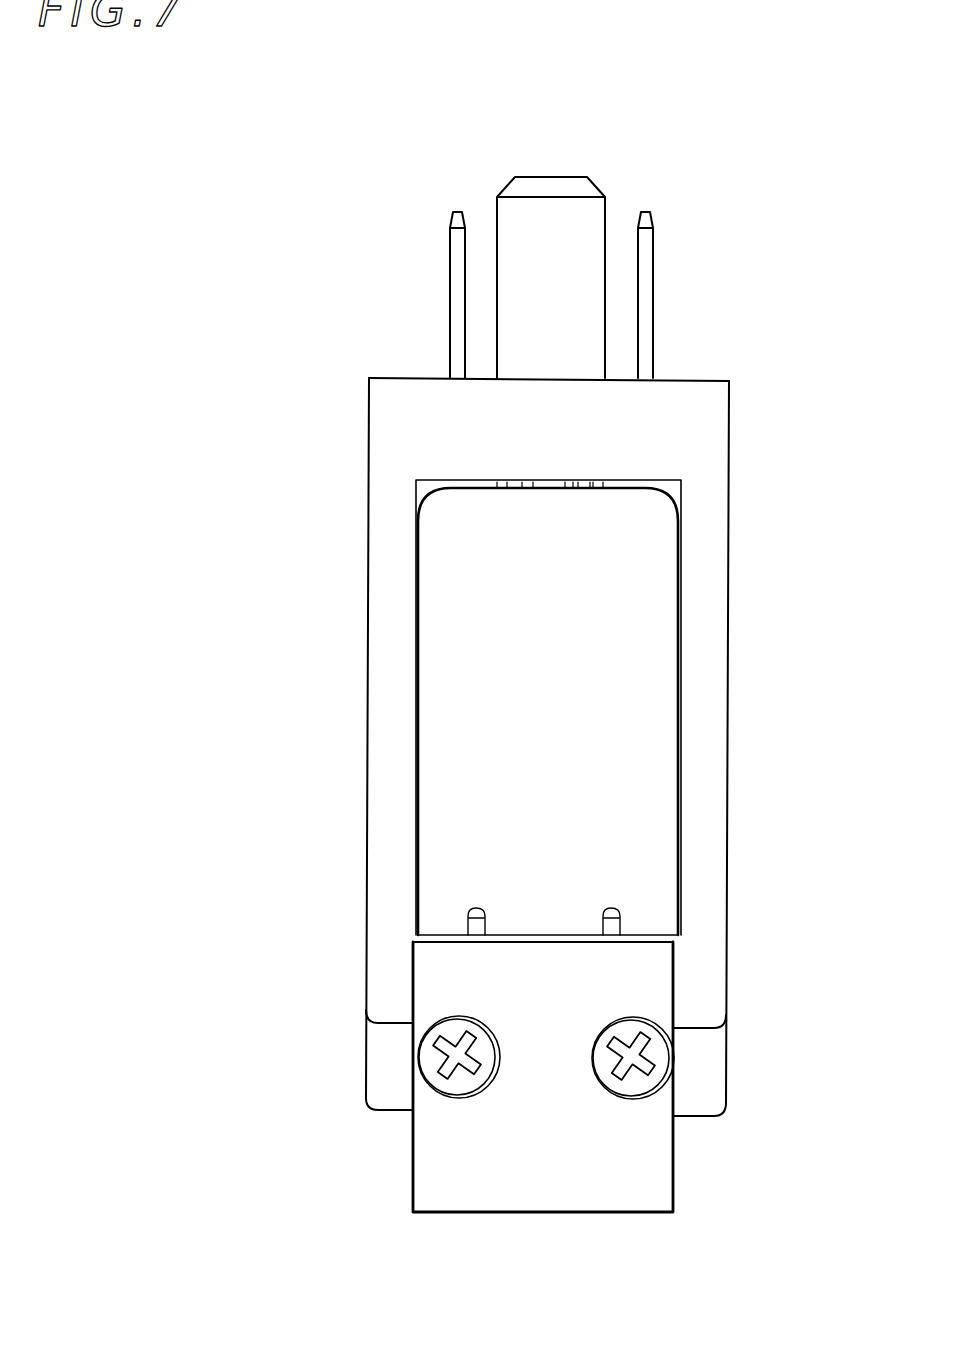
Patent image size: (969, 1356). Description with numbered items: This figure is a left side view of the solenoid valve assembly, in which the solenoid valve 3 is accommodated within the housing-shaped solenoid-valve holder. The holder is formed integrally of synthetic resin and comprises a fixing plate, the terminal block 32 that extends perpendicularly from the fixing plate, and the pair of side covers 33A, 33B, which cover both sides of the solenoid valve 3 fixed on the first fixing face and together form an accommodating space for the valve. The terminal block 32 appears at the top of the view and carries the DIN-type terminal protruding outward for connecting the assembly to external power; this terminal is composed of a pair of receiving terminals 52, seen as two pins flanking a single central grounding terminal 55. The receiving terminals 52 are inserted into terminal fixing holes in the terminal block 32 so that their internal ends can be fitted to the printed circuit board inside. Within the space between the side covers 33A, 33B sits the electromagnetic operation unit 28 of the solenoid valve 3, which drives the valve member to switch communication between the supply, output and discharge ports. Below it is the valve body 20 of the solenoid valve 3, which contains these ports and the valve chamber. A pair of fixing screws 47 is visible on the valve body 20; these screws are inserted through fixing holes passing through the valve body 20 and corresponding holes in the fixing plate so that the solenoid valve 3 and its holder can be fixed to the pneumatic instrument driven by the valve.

The solenoid valve 3 is at (488, 1246).
The valve body 20 is at (633, 1182).
The electromagnetic operation unit 28 is at (607, 577).
The terminal block 32 is at (703, 403).
The side cover 33A is at (383, 670).
The side cover 33B is at (707, 677).
The fixing screw 47 is at (452, 1080).
The receiving terminal 52 is at (448, 250).
The grounding terminal 55 is at (558, 215).